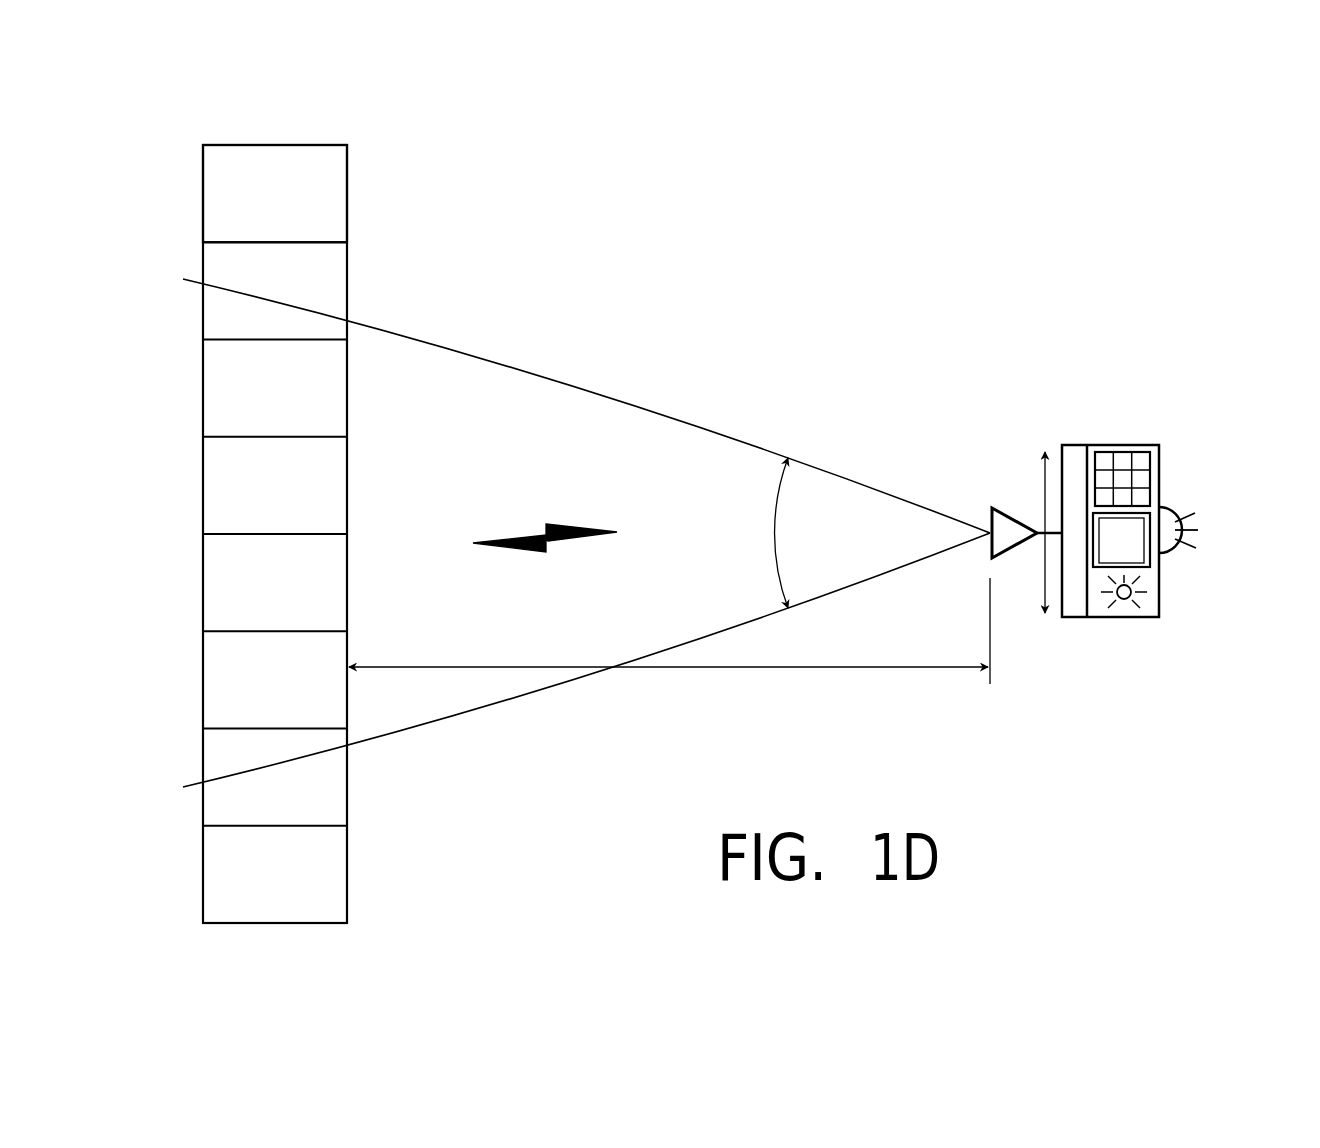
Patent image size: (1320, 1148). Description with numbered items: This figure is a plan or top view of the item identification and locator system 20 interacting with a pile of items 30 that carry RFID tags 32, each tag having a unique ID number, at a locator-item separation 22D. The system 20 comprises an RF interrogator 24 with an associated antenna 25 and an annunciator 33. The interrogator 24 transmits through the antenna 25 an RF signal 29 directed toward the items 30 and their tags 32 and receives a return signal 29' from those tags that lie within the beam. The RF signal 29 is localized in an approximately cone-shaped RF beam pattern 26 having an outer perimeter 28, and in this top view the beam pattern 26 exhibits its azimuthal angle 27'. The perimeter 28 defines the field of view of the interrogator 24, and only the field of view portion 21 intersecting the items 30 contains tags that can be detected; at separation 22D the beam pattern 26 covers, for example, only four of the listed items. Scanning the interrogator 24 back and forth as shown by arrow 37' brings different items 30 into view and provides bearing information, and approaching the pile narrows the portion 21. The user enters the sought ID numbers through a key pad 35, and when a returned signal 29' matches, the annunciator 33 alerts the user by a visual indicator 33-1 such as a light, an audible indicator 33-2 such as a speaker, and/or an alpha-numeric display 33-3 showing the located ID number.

The item identification and locator system 20 is at (1112, 540).
The field of view portion 21 is at (192, 530).
The locator-item separation 22D is at (758, 668).
The RF interrogator 24 is at (1095, 449).
The antenna 25 is at (992, 520).
The RF beam pattern 26 is at (838, 482).
The azimuthal angle 27' is at (740, 533).
The outer perimeter 28 is at (427, 343).
The RF signal 29 is at (509, 520).
The received signal 29' is at (581, 561).
The items 30 is at (378, 242).
The RFID tags 32 is at (255, 127).
The annunciator 33 is at (1151, 477).
The visual indicator 33-1 is at (1127, 606).
The audible indicator 33-2 is at (1167, 508).
The alpha-numeric display 33-3 is at (1133, 550).
The key pad 35 is at (1147, 478).
The scanning arrow 37' is at (1006, 538).